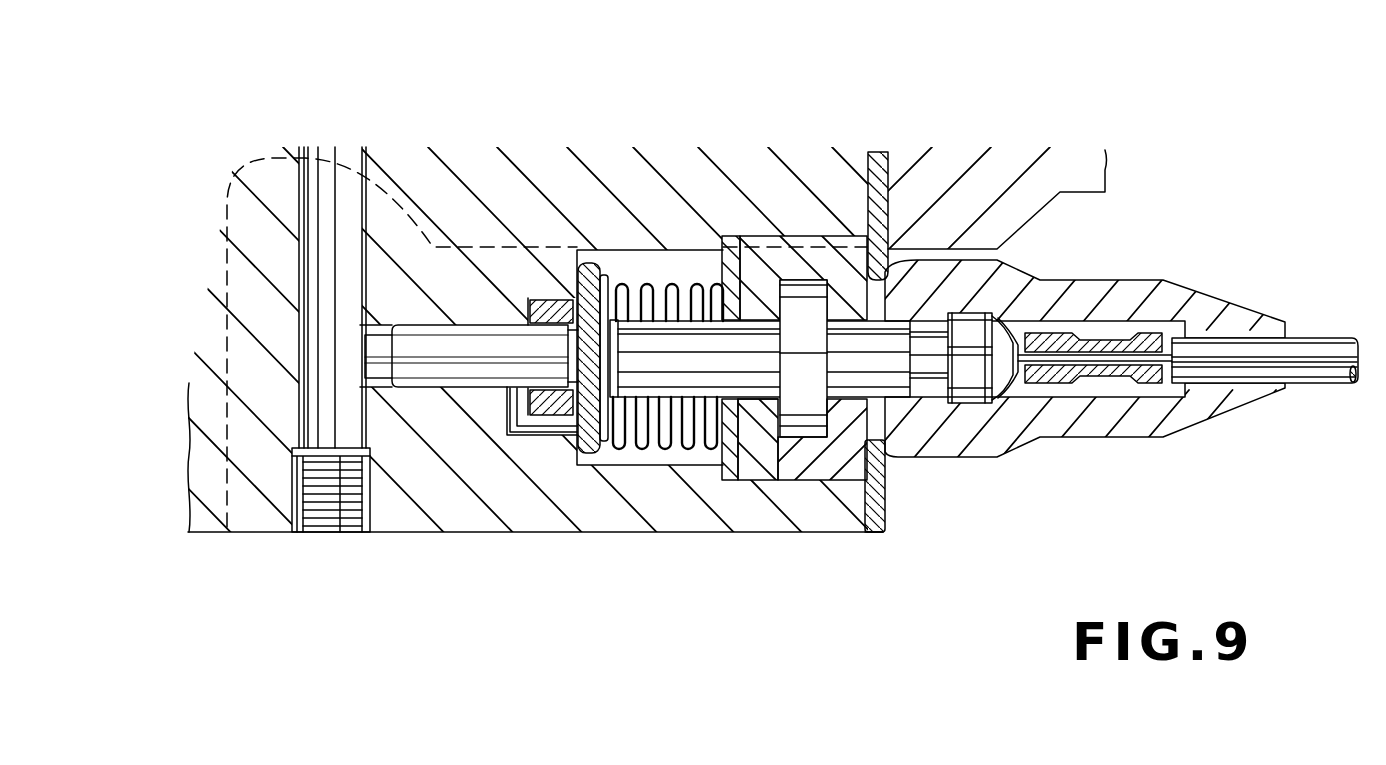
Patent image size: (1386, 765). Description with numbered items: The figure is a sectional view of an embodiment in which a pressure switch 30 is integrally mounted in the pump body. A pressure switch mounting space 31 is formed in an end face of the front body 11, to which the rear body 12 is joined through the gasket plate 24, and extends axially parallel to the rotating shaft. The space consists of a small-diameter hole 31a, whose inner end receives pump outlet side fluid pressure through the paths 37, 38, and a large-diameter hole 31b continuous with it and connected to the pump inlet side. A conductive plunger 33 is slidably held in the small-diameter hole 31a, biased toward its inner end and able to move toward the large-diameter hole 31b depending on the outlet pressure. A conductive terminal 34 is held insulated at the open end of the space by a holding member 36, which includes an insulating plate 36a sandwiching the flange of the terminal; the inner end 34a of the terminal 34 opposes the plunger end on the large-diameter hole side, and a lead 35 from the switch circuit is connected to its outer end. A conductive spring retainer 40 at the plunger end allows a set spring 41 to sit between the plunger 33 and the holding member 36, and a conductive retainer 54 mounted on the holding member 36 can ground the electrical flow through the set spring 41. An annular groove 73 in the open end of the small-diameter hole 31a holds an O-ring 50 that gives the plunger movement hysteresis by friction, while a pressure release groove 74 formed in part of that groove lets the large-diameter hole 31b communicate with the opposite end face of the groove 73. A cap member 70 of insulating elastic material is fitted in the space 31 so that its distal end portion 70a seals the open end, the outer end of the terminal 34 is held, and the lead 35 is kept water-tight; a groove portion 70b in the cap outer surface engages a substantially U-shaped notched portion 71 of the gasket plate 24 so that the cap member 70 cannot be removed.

The front body 11 is at (402, 467).
The rear body 12 is at (1062, 173).
The gasket plate 24 is at (884, 533).
The pressure switch 30 is at (538, 460).
The pressure switch mounting space 31 is at (623, 243).
The small-diameter hole 31a is at (437, 343).
The large-diameter hole 31b is at (655, 245).
The plunger 33 is at (455, 362).
The terminal 34 is at (768, 467).
The inner end of terminal 34a is at (751, 237).
The lead 35 is at (1310, 353).
The holding member 36 is at (758, 292).
The plate 36a is at (798, 455).
The path 37 is at (323, 277).
The path 38 is at (376, 333).
The spring retainer 40 is at (575, 292).
The set spring 41 is at (636, 440).
The O-ring 50 is at (555, 438).
The conductive retainer 54 is at (750, 376).
The cap member 70 is at (1063, 297).
The distal end portion 70a is at (838, 459).
The groove portion 70b is at (886, 473).
The notched portion 71 is at (888, 272).
The annular groove 73 is at (535, 298).
The pressure release groove 74 is at (512, 437).